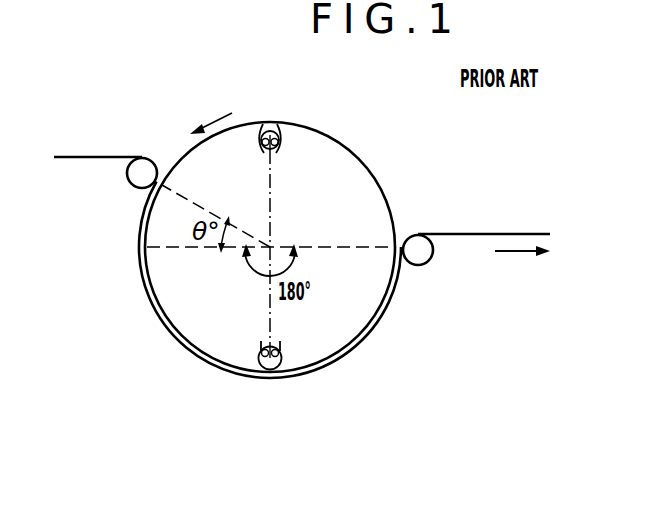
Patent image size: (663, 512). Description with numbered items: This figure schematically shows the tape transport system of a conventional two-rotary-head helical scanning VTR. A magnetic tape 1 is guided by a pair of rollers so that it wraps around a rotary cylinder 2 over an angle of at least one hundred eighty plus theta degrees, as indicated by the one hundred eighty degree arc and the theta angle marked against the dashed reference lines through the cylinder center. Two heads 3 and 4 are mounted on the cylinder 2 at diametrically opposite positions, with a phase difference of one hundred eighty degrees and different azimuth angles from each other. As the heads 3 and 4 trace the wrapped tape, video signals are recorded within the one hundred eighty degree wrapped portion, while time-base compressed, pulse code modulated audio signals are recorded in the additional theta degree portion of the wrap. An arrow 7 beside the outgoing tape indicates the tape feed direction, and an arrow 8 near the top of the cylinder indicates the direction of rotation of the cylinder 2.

The magnetic tape 1 is at (485, 233).
The rotary cylinder 2 is at (370, 197).
The head 3 is at (282, 128).
The head 4 is at (282, 357).
The web feed direction arrow 7 is at (505, 253).
The drum rotation direction arrow 8 is at (211, 119).